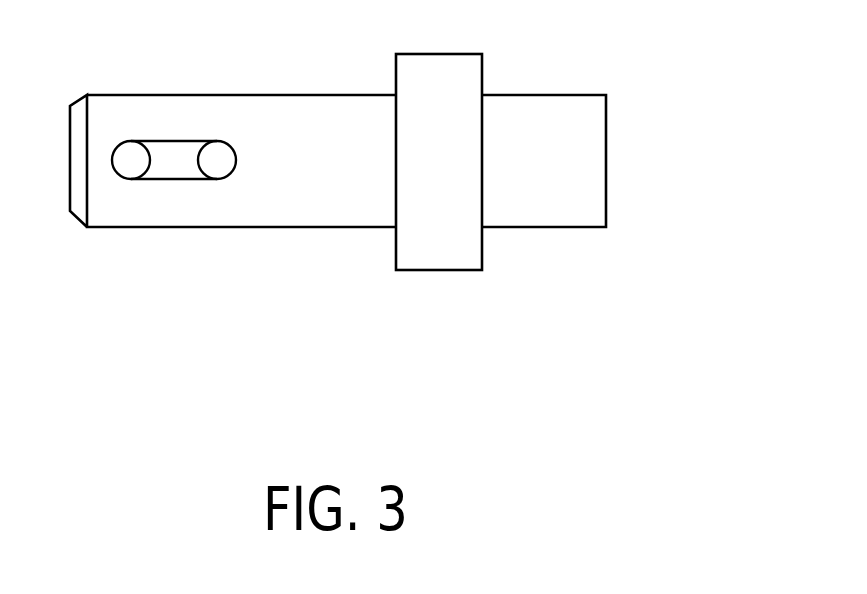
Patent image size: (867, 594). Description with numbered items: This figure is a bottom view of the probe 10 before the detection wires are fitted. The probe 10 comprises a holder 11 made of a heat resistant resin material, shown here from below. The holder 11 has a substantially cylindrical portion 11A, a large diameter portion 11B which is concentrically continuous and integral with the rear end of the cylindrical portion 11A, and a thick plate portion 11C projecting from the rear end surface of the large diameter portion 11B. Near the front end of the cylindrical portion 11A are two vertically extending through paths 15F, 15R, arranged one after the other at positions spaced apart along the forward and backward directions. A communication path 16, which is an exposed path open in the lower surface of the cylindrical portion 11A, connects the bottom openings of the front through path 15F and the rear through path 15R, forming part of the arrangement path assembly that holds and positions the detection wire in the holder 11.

The probe 10 is at (637, 90).
The holder 11 is at (603, 392).
The cylindrical portion 11A is at (347, 202).
The large diameter portion 11B is at (447, 248).
The plate portion 11C is at (575, 208).
The front through path 15F is at (127, 163).
The rear through path 15R is at (230, 163).
The communication path 16 is at (177, 162).